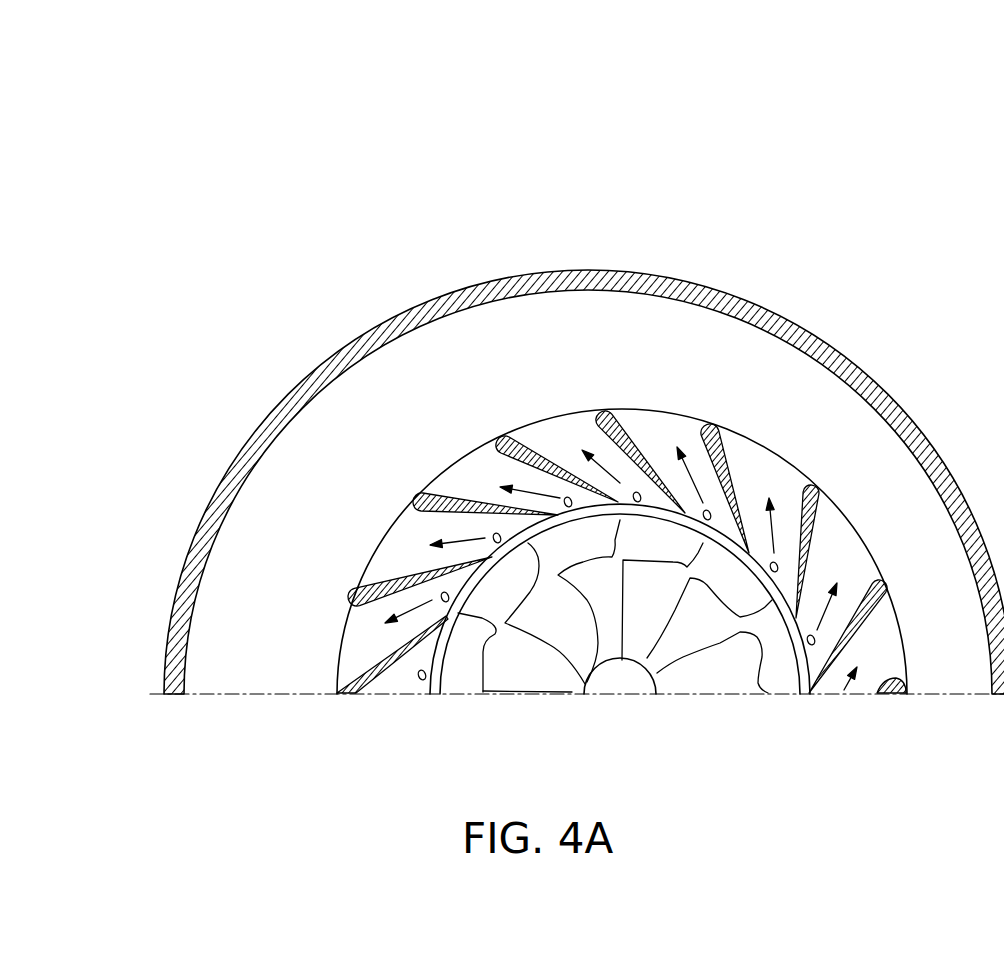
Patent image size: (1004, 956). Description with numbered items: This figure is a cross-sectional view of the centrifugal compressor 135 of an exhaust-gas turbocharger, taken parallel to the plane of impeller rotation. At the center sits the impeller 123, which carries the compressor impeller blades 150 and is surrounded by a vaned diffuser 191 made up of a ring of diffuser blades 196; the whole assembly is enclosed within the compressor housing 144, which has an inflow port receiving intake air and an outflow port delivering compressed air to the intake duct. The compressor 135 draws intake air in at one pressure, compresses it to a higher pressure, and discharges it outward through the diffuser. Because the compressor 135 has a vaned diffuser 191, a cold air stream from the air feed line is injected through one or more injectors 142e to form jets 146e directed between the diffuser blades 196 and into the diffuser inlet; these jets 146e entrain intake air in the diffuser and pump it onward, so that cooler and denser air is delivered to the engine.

The compressor 135 is at (584, 391).
The compressor housing 144 is at (643, 273).
The vaned diffuser 191 is at (443, 466).
The diffuser blades 196 is at (640, 450).
The jets 146e is at (560, 450).
The injectors 142e is at (636, 494).
The compressor impeller blades 150 is at (700, 655).
The impeller 123 is at (612, 680).